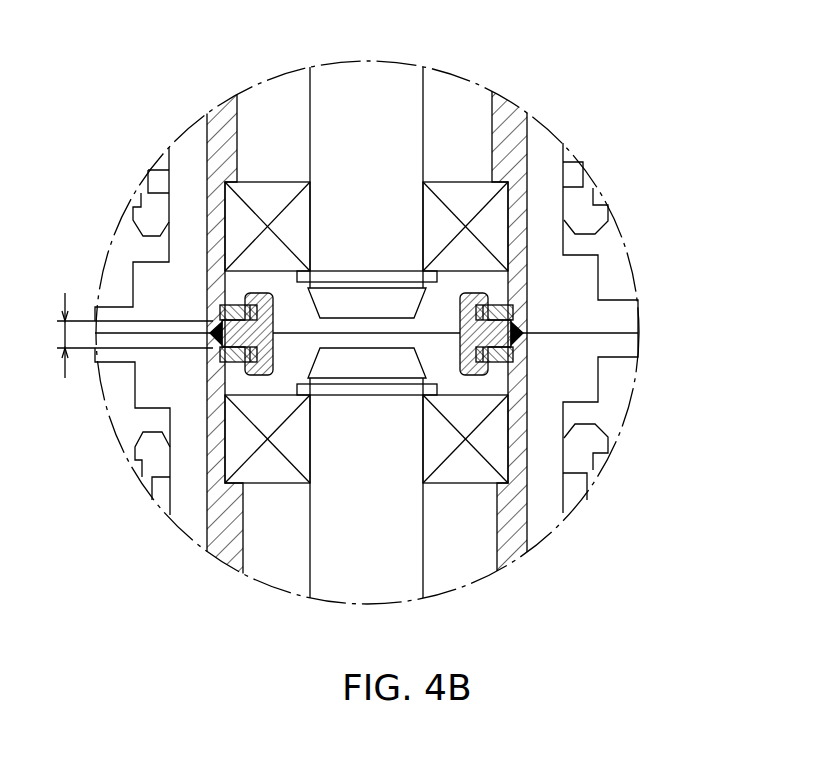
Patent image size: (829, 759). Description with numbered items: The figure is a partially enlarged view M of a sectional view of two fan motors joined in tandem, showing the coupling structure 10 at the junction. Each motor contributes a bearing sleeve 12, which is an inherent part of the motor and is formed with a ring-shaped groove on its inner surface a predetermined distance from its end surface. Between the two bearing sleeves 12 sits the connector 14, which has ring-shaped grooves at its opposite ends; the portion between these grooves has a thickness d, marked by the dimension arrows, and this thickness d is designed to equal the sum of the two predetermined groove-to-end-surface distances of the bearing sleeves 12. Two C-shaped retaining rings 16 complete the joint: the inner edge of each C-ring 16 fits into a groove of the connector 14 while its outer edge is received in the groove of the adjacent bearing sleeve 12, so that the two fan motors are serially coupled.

The coupling structure 10 is at (727, 128).
The bearing sleeve 12 is at (518, 196).
The connector 14 is at (527, 331).
The C-shaped retaining ring 16 is at (513, 305).
The partially enlarged view M is at (472, 81).
The thickness d is at (124, 335).